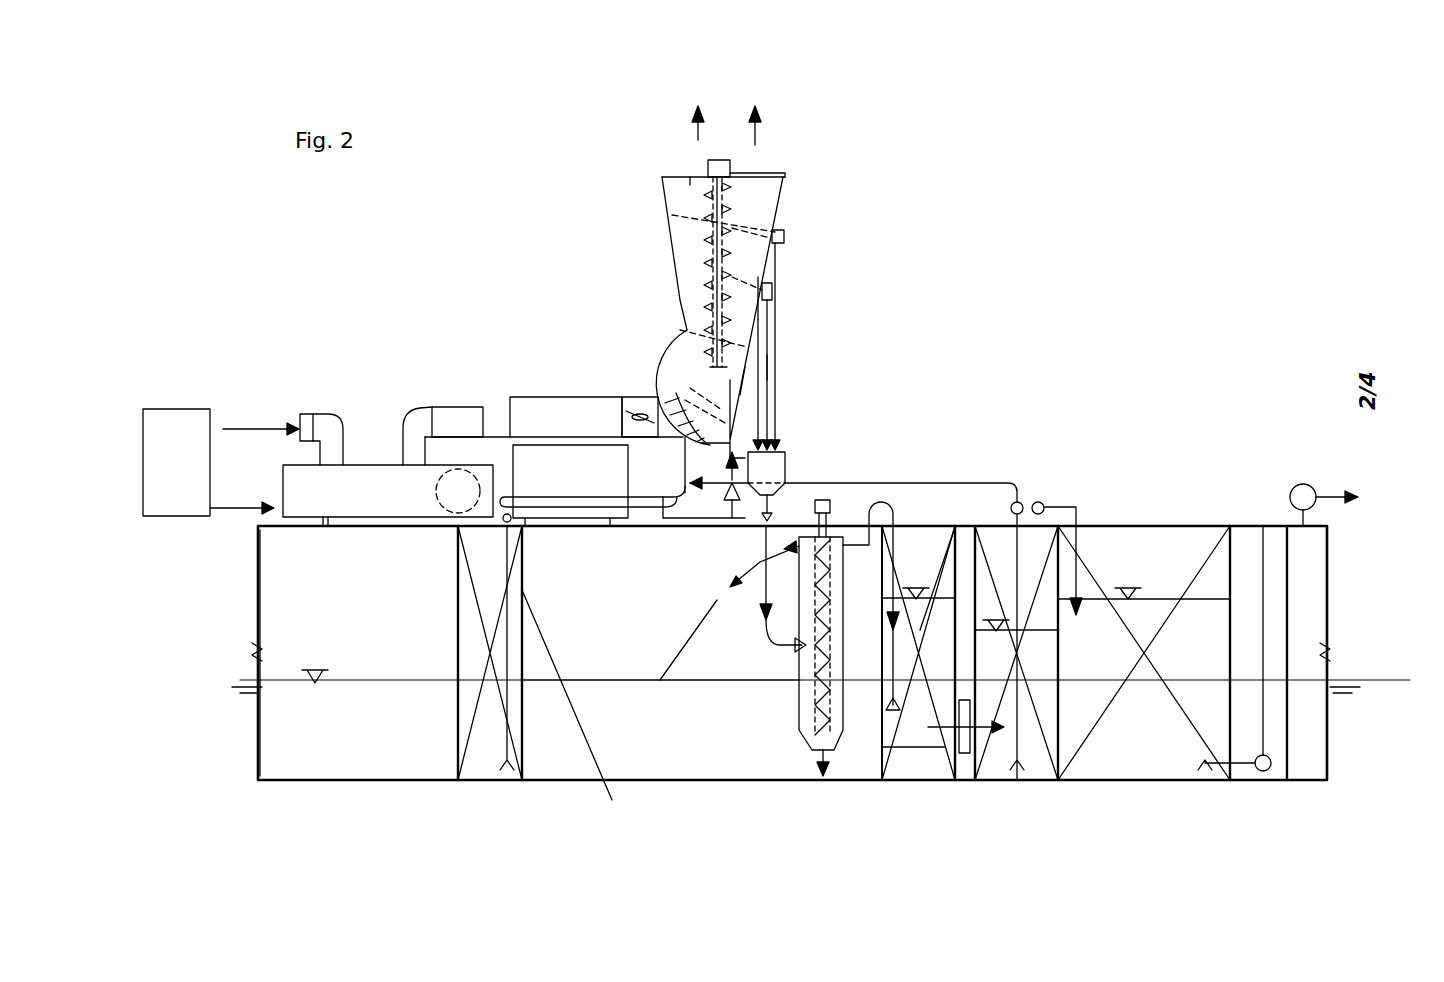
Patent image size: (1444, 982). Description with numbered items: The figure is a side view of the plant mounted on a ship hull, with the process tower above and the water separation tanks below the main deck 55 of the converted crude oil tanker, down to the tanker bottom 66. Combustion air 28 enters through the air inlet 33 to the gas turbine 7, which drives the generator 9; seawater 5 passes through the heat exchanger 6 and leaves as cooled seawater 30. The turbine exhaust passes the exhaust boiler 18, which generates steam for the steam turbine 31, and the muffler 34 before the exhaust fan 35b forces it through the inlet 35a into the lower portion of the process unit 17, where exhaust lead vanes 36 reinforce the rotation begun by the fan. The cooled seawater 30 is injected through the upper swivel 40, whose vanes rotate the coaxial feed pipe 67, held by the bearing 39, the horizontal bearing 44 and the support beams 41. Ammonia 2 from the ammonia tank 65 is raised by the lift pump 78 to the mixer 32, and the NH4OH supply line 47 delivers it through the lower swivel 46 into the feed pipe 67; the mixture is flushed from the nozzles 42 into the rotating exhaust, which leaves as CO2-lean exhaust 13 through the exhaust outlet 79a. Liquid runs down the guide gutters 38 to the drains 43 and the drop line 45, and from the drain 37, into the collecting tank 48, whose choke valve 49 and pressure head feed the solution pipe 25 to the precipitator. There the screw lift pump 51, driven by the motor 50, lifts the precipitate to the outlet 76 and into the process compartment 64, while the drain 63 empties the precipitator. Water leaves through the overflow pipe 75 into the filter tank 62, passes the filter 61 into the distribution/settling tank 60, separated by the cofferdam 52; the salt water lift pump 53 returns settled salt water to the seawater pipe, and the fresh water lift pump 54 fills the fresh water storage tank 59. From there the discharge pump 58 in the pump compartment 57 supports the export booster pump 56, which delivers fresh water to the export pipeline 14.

The ammonia NH3 2 is at (613, 493).
The seawater 5 is at (238, 503).
The heat exchanger 6 is at (177, 443).
The gas turbine 7 is at (397, 487).
The generator 9 is at (455, 485).
The CO2-lean exhaust 13 is at (731, 112).
The fresh water export pipeline 14 is at (1362, 497).
The process unit 17 is at (680, 300).
The exhaust boiler 18 is at (537, 473).
The NaHCO3 and NH4Cl solution pipe 25 is at (772, 647).
The combustion air 28 is at (227, 426).
The cooled seawater 30 is at (680, 170).
The steam turbine 31 is at (548, 422).
The mixer 32 is at (740, 480).
The air inlet 33 is at (300, 420).
The muffler 34 is at (463, 423).
The inlet 35a is at (672, 395).
The exhaust fan 35b is at (650, 383).
The exhaust lead vanes 36 is at (672, 357).
The drain 37 is at (690, 385).
The guide gutter 38 is at (677, 167).
The horizontal and vertical bearing 39 is at (718, 163).
The upper swivel 40 is at (708, 165).
The support beams 41 is at (772, 172).
The nozzles 42 is at (732, 210).
The drain 43 is at (776, 278).
The horizontal bearing 44 is at (777, 330).
The drop line 45 is at (770, 300).
The lower swivel 46 is at (768, 365).
The NH4OH supply line 47 is at (745, 398).
The collecting tank 48 is at (767, 472).
The choke valve 49 is at (815, 483).
The motor 50 is at (830, 500).
The screw lift pump 51 is at (955, 527).
The cofferdam 52 is at (963, 535).
The salt water lift pump 53 is at (1022, 500).
The fresh water lift pump 54 is at (1044, 501).
The main deck 55 is at (1142, 522).
The export booster pump 56 is at (1312, 487).
The pump compartment 57 is at (1273, 717).
The discharge pump 58 is at (1266, 771).
The fresh water storage tank 59 is at (1133, 762).
The distribution/settling tank 60 is at (1035, 717).
The filter 61 is at (973, 760).
The filter tank 62 is at (912, 737).
The drain 63 is at (828, 763).
The process compartment 64 is at (603, 717).
The ammonia tank 65 is at (492, 713).
The tanker bottom 66 is at (333, 780).
The rotating coaxial feed pipe 67 is at (700, 322).
The overflow pipe 75 is at (828, 585).
The outlet of precipitated material 76 is at (660, 680).
The lift pump 78 is at (612, 800).
The exhaust outlet 79a is at (695, 175).